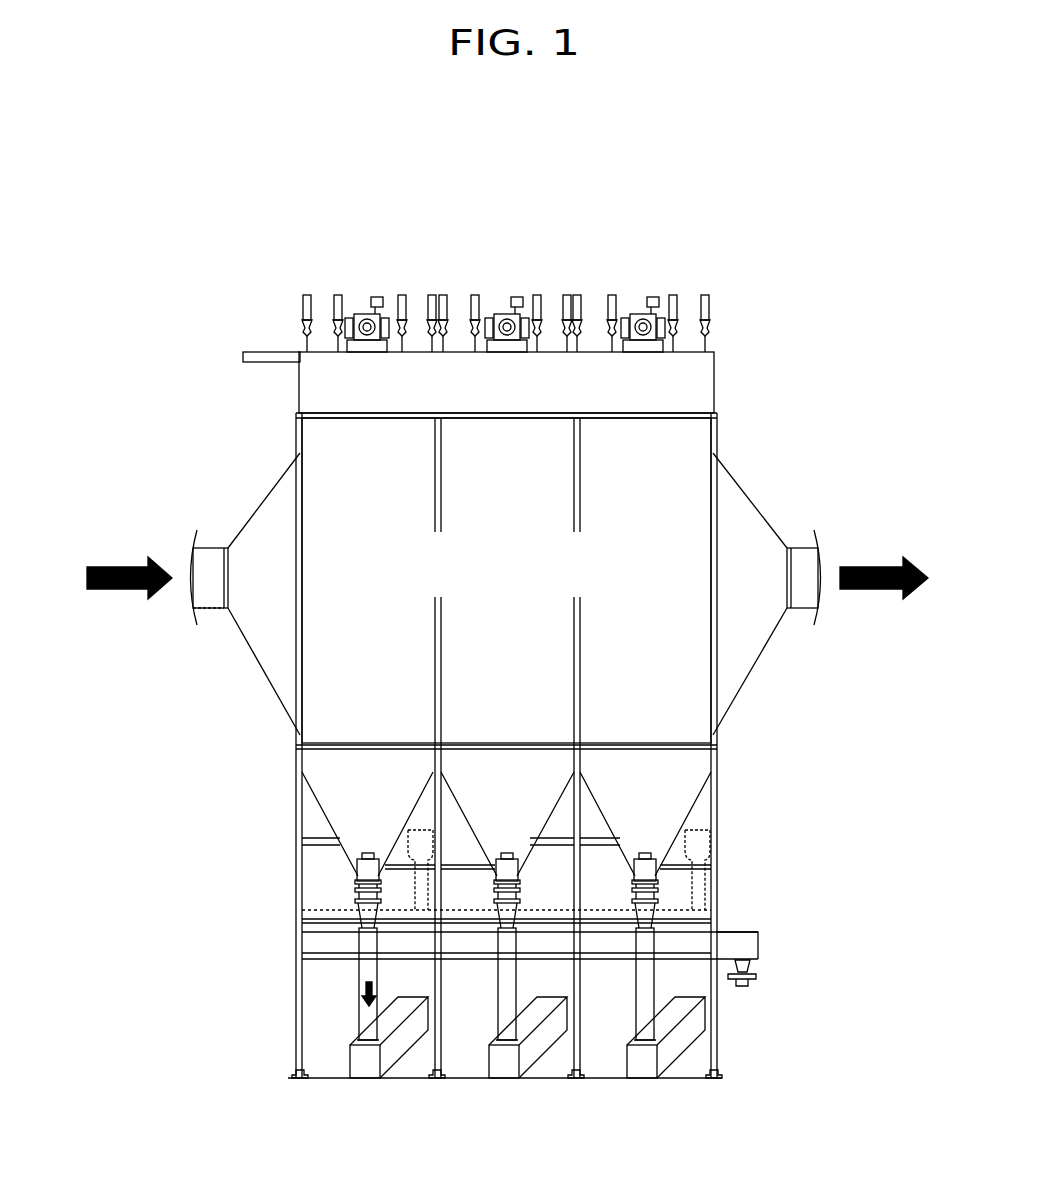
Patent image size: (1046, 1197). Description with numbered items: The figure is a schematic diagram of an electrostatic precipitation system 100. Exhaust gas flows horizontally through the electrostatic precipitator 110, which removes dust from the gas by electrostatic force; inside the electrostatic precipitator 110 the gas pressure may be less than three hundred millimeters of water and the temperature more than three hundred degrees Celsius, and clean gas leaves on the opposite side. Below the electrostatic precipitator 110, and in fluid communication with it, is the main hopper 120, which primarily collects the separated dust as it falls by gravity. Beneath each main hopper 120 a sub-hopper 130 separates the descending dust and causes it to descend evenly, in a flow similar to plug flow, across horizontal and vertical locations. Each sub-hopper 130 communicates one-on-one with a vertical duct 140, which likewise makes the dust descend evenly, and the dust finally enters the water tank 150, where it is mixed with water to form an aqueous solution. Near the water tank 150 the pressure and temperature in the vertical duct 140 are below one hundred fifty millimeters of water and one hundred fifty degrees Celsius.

The electrostatic precipitation system 100 is at (768, 296).
The electrostatic precipitator 110 is at (531, 485).
The main hopper 120 is at (388, 800).
The sub-hopper 130 is at (357, 897).
The vertical duct 140 is at (359, 983).
The water tank 150 is at (363, 1062).